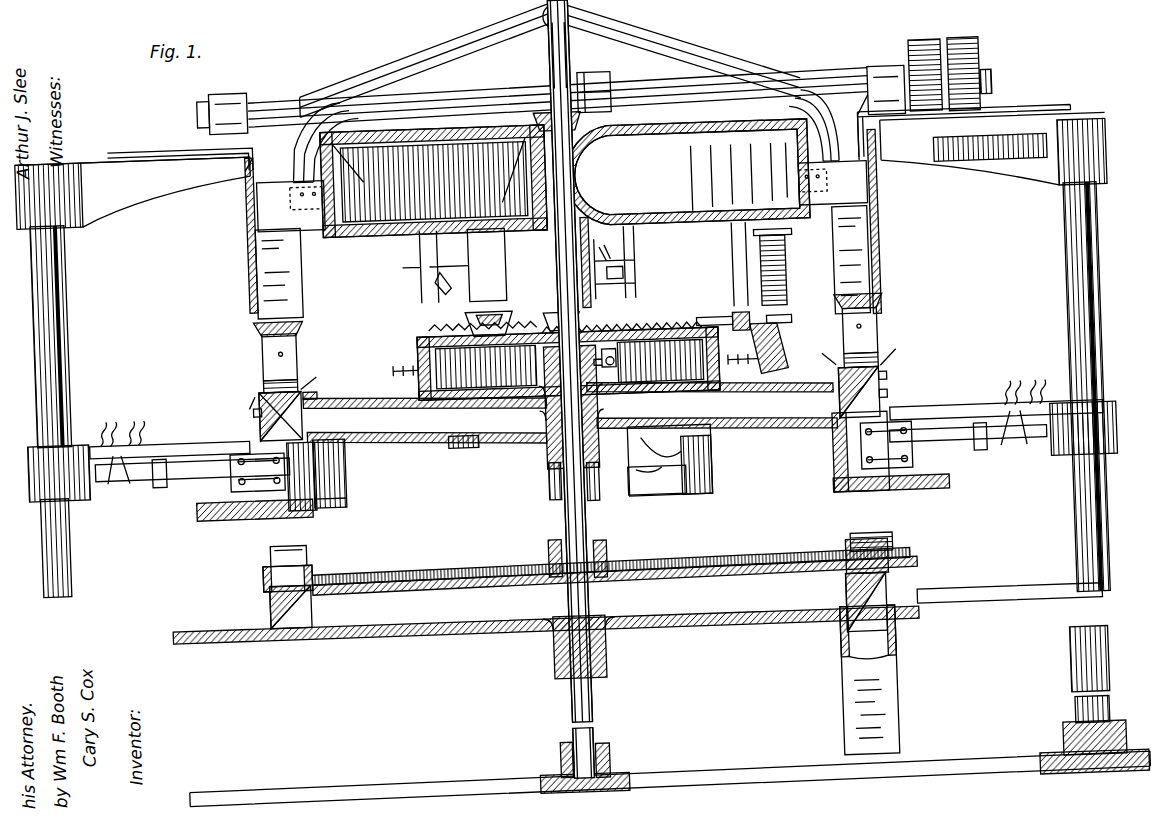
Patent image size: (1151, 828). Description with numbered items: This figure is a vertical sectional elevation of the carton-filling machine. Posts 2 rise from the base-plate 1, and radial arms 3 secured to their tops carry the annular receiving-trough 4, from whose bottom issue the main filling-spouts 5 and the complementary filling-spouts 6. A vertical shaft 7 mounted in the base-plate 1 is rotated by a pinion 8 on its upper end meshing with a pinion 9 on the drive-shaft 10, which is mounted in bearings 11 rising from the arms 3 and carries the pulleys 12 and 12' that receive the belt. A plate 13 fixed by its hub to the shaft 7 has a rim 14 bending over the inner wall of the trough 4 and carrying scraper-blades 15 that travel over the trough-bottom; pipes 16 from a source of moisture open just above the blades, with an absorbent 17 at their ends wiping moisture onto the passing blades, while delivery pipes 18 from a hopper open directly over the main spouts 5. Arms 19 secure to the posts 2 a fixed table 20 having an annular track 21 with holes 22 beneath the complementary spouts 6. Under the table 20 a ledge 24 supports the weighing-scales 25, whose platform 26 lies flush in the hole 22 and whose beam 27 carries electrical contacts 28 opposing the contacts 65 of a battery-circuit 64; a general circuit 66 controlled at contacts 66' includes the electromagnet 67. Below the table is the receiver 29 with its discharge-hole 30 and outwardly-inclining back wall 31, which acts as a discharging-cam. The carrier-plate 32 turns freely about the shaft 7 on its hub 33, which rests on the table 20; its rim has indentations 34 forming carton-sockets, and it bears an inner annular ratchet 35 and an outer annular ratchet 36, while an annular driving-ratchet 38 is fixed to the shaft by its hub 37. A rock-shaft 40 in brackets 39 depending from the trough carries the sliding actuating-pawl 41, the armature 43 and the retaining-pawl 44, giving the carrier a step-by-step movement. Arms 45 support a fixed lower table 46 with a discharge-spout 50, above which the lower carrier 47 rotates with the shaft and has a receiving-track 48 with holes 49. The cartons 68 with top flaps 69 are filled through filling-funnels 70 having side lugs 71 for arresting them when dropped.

The base-plate 1 is at (448, 780).
The posts 2 is at (72, 242).
The radial arms 3 is at (150, 145).
The annular receiving-trough 4 is at (254, 180).
The main filling-spouts 5 is at (500, 262).
The complementary filling-spouts 6 is at (300, 296).
The vertical shaft 7 is at (562, 506).
The pinion 8 is at (546, 122).
The pinion 9 is at (606, 88).
The drive-shaft 10 is at (826, 85).
The bearings 11 is at (255, 84).
The pulley 12 is at (926, 61).
The pulley 12' is at (992, 61).
The plate 13 is at (680, 137).
The rim 14 is at (770, 165).
The scraper-blades 15 is at (561, 196).
The pipes 16 is at (178, 138).
The absorbent 17 is at (250, 160).
The delivery or feed pipes 18 is at (410, 60).
The arms 19 is at (168, 430).
The fixed table 20 is at (438, 442).
The annular track 21 is at (334, 410).
The holes 22 is at (258, 428).
The ledge 24 is at (266, 508).
The weighing-scales 25 is at (236, 470).
The platform 26 is at (316, 450).
The beam 27 is at (186, 466).
The electrical contacts 28 is at (112, 460).
The receiver 29 is at (344, 492).
The discharge-hole 30 is at (660, 498).
The outwardly-inclining back wall 31 is at (344, 470).
The carrier-plate 32 is at (340, 388).
The hub 33 is at (604, 413).
The indentations 34 is at (254, 398).
The inner annular ratchet 35 is at (420, 336).
The outer annular ratchet 36 is at (395, 366).
The hub 37 is at (621, 357).
The annular driving-ratchet 38 is at (652, 326).
The brackets 39 is at (738, 283).
The rock-shaft 40 is at (738, 318).
The actuating-pawl 41 is at (702, 325).
The armature 43 is at (794, 326).
The retaining-pawl 44 is at (792, 355).
The arms 45 is at (972, 610).
The fixed lower table 46 is at (408, 630).
The lower carrier 47 is at (398, 586).
The receiving-track 48 is at (258, 566).
The holes 49 is at (858, 548).
The discharge-spout 50 is at (880, 688).
The battery-circuit 64 is at (132, 404).
The contacts 65 is at (566, 447).
The general circuit 66 is at (568, 400).
The contacts 66' is at (576, 450).
The electromagnet 67 is at (792, 282).
The cartons 68 is at (302, 386).
The top flaps 69 is at (882, 372).
The filling-funnels 70 is at (300, 348).
The side lugs 71 is at (280, 344).